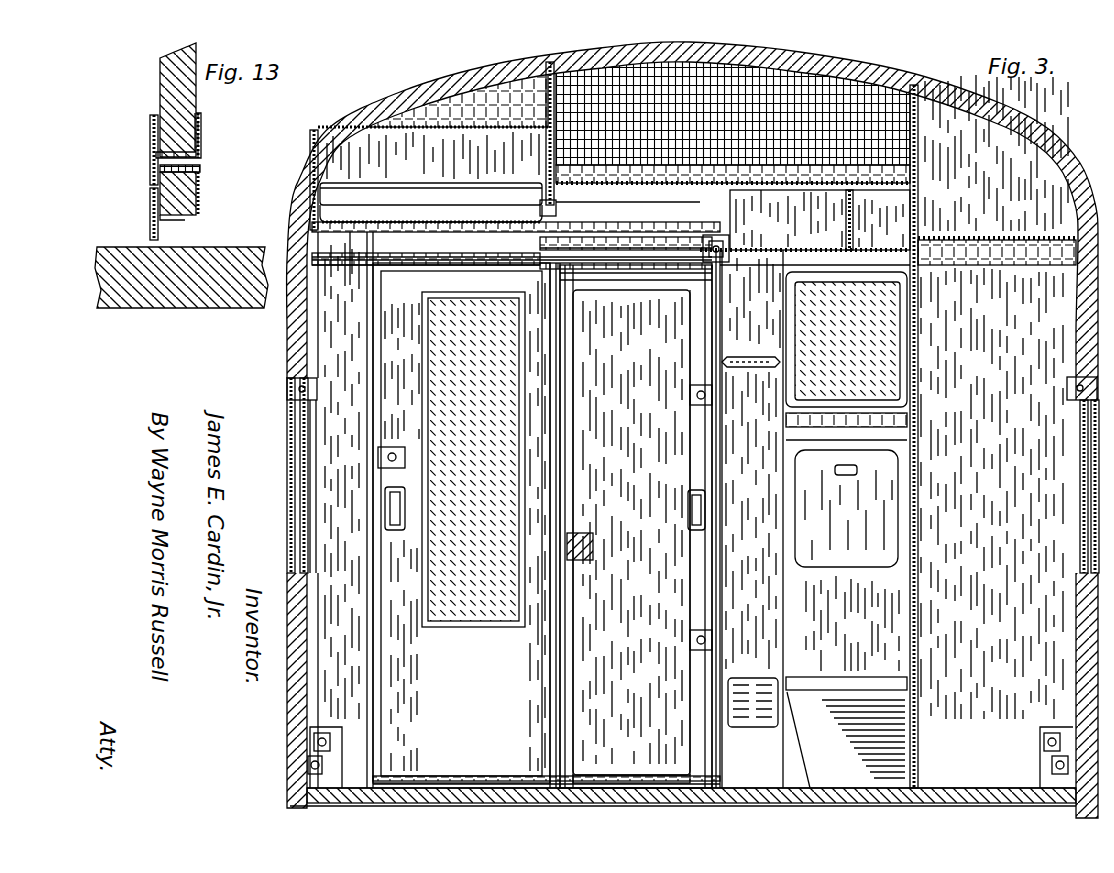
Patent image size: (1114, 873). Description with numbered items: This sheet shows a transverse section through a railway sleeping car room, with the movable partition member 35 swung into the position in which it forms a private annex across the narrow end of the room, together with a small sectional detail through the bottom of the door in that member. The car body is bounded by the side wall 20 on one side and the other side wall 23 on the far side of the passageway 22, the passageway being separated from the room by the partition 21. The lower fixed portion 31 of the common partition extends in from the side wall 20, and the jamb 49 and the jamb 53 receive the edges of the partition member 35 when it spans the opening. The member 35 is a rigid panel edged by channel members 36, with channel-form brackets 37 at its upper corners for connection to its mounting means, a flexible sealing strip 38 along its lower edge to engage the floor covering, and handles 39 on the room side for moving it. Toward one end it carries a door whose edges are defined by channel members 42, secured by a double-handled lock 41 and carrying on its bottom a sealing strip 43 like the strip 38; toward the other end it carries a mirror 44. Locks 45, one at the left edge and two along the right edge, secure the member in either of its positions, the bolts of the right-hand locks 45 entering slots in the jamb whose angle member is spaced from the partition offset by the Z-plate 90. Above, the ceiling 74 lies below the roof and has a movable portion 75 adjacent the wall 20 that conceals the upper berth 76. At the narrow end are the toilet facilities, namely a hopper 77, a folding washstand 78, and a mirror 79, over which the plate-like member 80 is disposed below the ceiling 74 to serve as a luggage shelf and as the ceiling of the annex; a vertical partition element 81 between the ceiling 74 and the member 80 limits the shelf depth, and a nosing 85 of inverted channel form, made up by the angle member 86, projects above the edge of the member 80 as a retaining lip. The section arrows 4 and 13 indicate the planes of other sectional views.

In FIG. 3, the section line 4- 4 is at (354, 244).
In FIG. 3, the section line 13- 13 is at (618, 817).
In FIG. 3, the side wall 20 is at (300, 650).
In FIG. 3, the partition 21 is at (913, 470).
In FIG. 3, the passageway 22 is at (990, 665).
In FIG. 3, the side wall 23 is at (1085, 330).
In FIG. 3, the fixed partition portion 31 is at (352, 531).
In FIG. 13, the movable partition member 35 is at (185, 220).
In FIG. 3, the movable partition member 35 is at (484, 673).
In FIG. 3, the channel members 36 is at (380, 707).
In FIG. 3, the channel-form brackets 37 is at (461, 523).
In FIG. 13, the flexible sealing strip 38 is at (150, 225).
In FIG. 3, the flexible sealing strip 38 is at (500, 784).
In FIG. 3, the handles 39 is at (407, 510).
In FIG. 3, the double-handled lock 41 is at (595, 541).
In FIG. 13, the channel members 42 is at (198, 145).
In FIG. 3, the channel members 42 is at (555, 700).
In FIG. 13, the sealing strip 43 is at (150, 150).
In FIG. 3, the sealing strip 43 is at (595, 773).
In FIG. 3, the mirror 44 is at (485, 383).
In FIG. 3, the locks 45 is at (400, 452).
In FIG. 3, the jamb 49 is at (361, 411).
In FIG. 3, the jamb 53 is at (733, 463).
In FIG. 3, the ceiling 74 is at (654, 205).
In FIG. 3, the movable ceiling portion 75 is at (482, 228).
In FIG. 3, the upper berth 76 is at (450, 192).
In FIG. 3, the hopper 77 is at (890, 734).
In FIG. 3, the folding washstand 78 is at (882, 528).
In FIG. 3, the mirror 79 is at (890, 355).
In FIG. 3, the plate-like member 80 is at (765, 248).
In FIG. 3, the vertical partition element 81 is at (855, 226).
In FIG. 3, the nosing 85 is at (718, 200).
In FIG. 3, the angle member 86 is at (684, 214).
In FIG. 13, the Z-plate 90 is at (172, 70).
In FIG. 3, the Z-plate 90 is at (636, 448).